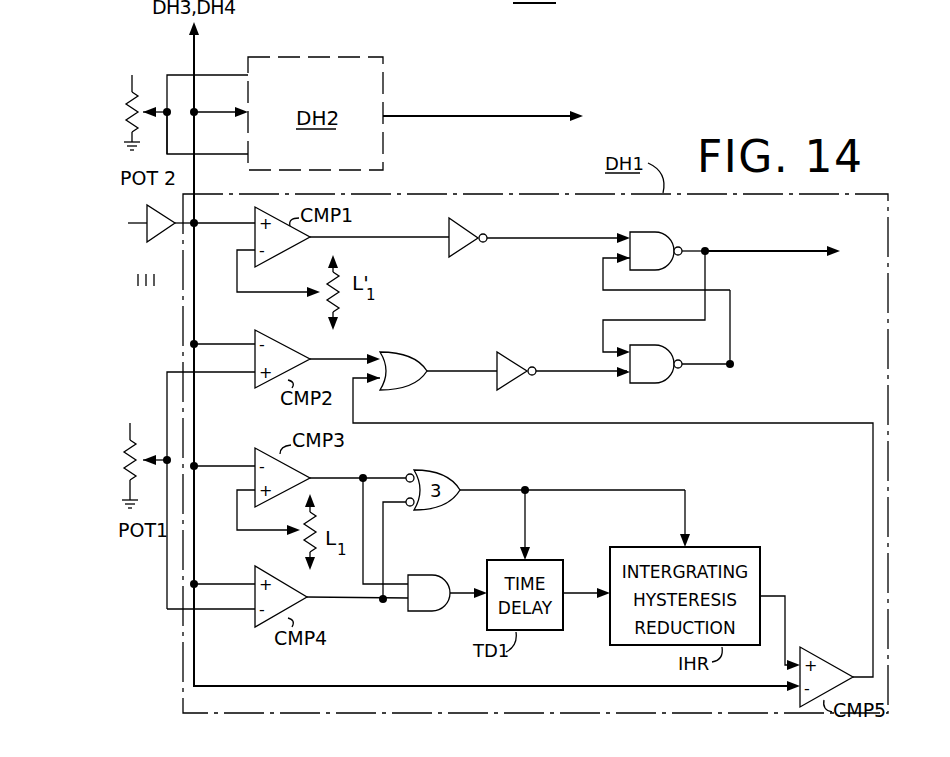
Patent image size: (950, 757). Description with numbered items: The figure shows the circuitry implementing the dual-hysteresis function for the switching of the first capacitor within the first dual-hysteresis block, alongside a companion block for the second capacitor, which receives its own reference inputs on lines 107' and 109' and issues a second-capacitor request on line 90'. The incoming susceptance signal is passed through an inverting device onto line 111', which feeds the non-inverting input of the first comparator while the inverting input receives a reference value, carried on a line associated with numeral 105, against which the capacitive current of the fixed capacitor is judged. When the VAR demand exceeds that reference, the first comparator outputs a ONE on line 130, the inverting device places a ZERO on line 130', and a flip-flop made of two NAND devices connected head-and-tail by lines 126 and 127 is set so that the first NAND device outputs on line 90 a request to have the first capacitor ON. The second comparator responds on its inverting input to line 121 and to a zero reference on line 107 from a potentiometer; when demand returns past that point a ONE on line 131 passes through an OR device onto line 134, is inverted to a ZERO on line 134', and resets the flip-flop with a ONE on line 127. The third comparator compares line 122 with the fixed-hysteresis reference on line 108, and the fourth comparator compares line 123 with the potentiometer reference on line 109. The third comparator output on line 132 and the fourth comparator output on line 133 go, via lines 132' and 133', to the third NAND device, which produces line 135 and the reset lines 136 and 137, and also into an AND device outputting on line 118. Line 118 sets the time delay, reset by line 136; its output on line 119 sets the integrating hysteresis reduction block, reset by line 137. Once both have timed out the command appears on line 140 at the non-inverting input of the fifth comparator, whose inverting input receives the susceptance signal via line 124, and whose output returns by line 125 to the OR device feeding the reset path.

The signal line to DH2 107' is at (207, 96).
The signal line to DH2 109' is at (207, 152).
The C2 request output line 90' is at (483, 118).
The line carrying inverted susceptance signal 111' is at (160, 245).
The hysteresis feedback line of CMP1 105 is at (237, 268).
The comparator CMP1 output line 130 is at (379, 222).
The inverted CMP1 output line 130' is at (539, 233).
The flip-flop cross-connection line 126 is at (716, 256).
The capacitor C1 request line 90 is at (772, 250).
The comparator CMP2 input line 121 is at (242, 348).
The comparator CMP2 output line 131 is at (340, 358).
The OR gate output line 134 is at (462, 355).
The inverted reset line 134' is at (563, 365).
The NAND device #2 output line 127 is at (730, 342).
The zero reference line from potentiometer 107 is at (191, 490).
The comparator CMP3 input line 122 is at (243, 466).
The comparator CMP3 output line 132 is at (358, 460).
The branch line of CMP3 output 132' is at (367, 531).
The branch line of CMP4 output 133' is at (412, 550).
The NAND device #3 output line 135 is at (478, 490).
The time delay reset line 136 is at (525, 521).
The IHR reset line 137 is at (685, 517).
The comparator CMP4 input line 123 is at (202, 584).
The fixed-hysteresis reference line 108 is at (237, 524).
The potentiometer reference line 109 is at (191, 586).
The comparator CMP4 output line 133 is at (357, 610).
The AND device output line 118 is at (458, 582).
The time delay output line 119 is at (576, 593).
The command line to CMP5 140 is at (788, 603).
The CMP5 inverting input line 124 is at (380, 686).
The CMP5 feedback line 125 is at (800, 423).